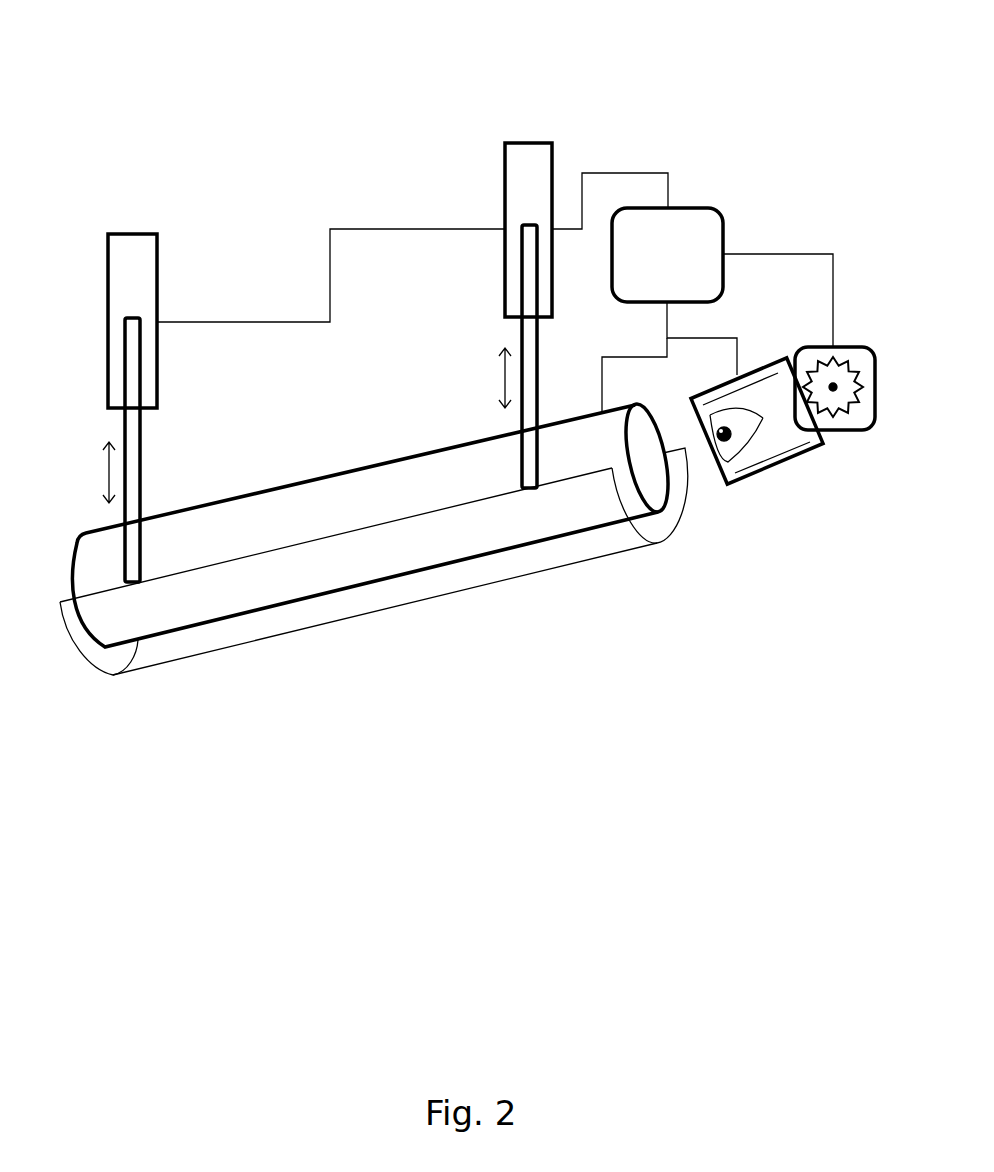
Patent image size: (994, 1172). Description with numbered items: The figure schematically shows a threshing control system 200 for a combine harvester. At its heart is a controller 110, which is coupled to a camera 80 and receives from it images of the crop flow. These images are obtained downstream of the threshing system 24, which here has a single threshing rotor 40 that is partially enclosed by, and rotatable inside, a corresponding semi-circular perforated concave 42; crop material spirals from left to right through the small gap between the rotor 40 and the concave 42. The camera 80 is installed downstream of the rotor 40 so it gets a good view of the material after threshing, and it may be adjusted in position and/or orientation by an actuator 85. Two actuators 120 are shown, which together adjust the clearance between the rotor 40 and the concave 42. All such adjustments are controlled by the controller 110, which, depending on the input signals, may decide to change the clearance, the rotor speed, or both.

The threshing control system 200 is at (378, 100).
The threshing system 24 is at (707, 523).
The threshing rotor 40 is at (380, 463).
The threshing concave 42 is at (392, 608).
The actuator 120 is at (130, 235).
The controller 110 is at (645, 271).
The camera 80 is at (777, 468).
The actuator 85 is at (845, 347).